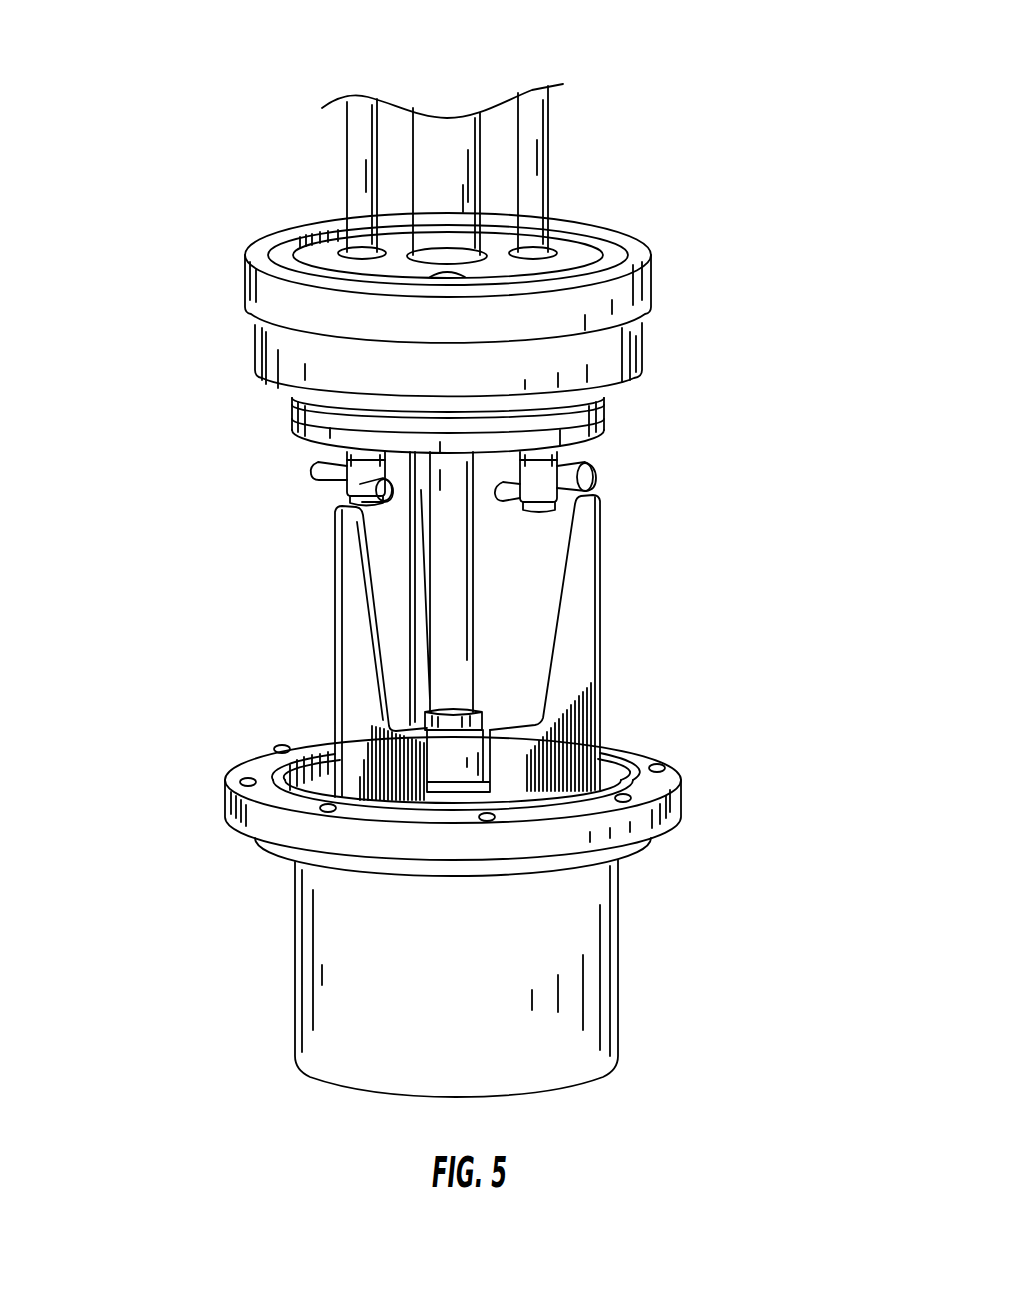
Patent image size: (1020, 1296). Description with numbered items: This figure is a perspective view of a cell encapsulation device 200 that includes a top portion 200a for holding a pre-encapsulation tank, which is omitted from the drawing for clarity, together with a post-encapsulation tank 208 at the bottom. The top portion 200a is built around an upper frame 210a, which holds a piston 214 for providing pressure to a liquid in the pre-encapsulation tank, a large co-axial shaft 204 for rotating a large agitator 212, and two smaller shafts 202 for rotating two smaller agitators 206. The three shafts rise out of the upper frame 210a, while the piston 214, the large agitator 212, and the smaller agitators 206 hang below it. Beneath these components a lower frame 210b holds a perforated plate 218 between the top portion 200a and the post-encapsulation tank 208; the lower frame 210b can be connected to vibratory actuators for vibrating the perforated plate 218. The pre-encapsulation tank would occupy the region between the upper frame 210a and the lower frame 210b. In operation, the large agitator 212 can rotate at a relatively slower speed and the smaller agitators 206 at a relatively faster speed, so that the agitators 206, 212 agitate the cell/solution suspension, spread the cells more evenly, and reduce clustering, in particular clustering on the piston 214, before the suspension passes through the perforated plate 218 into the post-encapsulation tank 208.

The device 200 is at (487, 551).
The top portion 200a is at (457, 402).
The smaller shafts 202 is at (333, 161).
The co-axial shaft 204 is at (433, 97).
The smaller agitators 206 is at (613, 483).
The post-encapsulation tank 208 is at (608, 946).
The upper frame 210a is at (643, 240).
The lower frame 210b is at (228, 835).
The large agitator 212 is at (307, 627).
The piston 214 is at (277, 406).
The perforated plate 218 is at (502, 798).